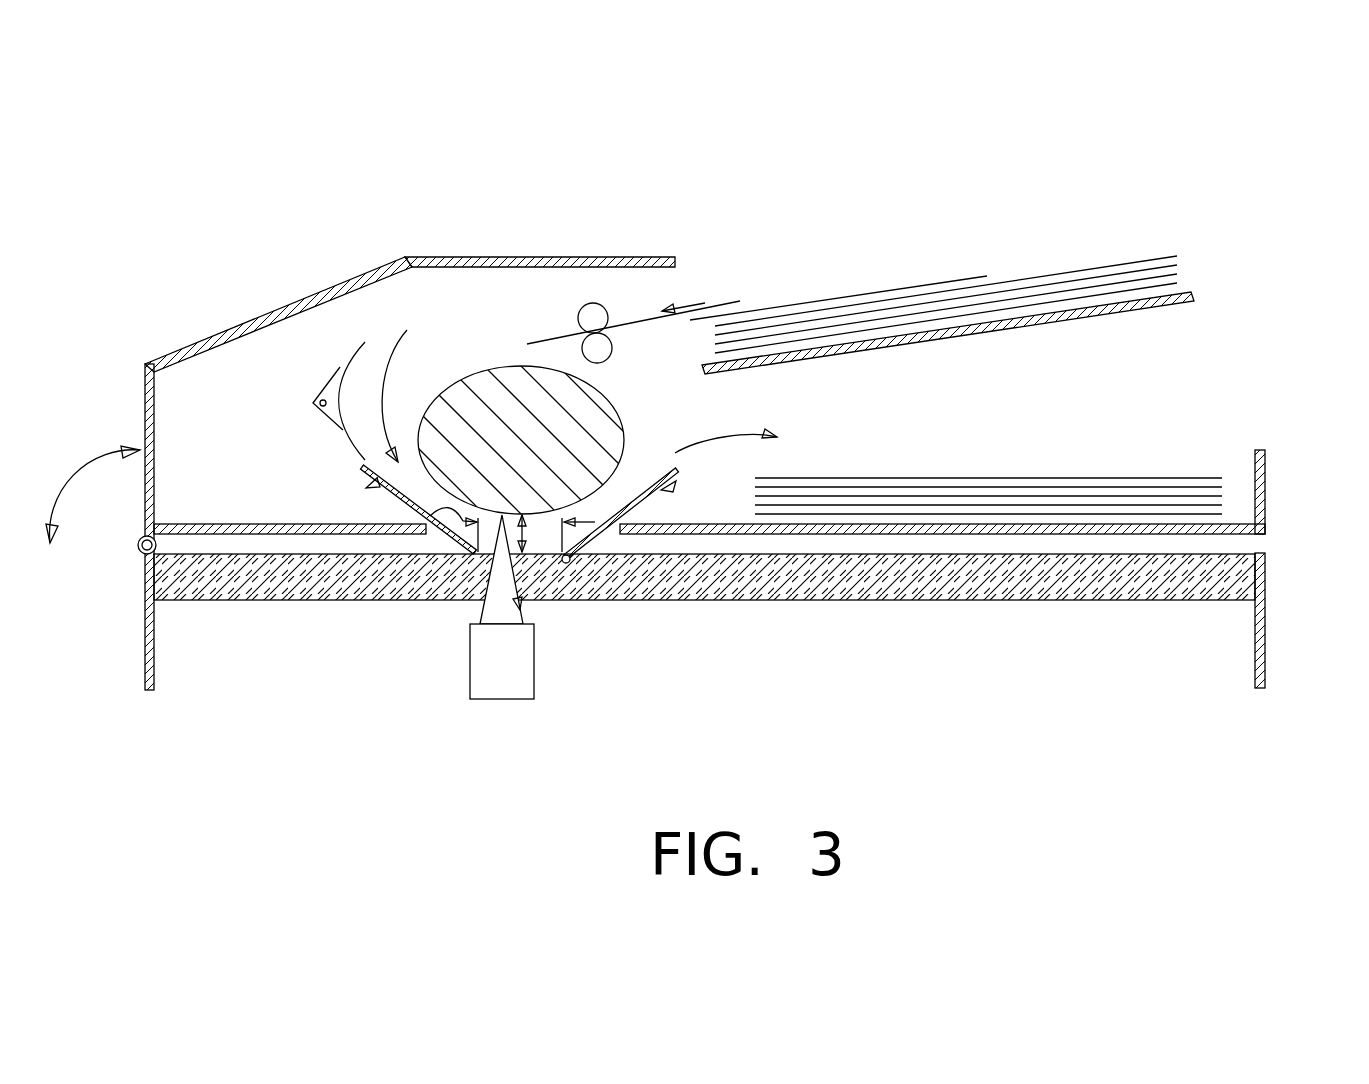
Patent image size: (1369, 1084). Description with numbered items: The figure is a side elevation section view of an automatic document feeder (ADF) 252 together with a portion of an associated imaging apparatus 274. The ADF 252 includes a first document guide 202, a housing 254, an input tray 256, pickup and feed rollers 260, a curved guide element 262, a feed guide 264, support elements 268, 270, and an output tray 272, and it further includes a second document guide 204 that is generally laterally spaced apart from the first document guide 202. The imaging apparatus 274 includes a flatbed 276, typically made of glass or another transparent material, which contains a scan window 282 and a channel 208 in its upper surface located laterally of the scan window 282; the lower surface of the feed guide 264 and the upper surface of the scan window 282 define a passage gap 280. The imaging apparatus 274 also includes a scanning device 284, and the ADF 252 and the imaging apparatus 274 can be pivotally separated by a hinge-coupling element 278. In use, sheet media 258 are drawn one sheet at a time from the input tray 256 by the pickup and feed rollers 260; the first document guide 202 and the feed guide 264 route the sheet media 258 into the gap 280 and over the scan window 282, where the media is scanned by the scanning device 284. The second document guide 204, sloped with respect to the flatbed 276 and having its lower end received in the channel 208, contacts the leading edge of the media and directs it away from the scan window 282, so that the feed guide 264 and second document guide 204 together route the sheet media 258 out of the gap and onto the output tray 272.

The first document guide 202 is at (362, 467).
The second document guide 204 is at (656, 483).
The channel 208 is at (569, 562).
The automatic document feeder 252 is at (1172, 414).
The housing 254 is at (633, 258).
The input tray 256 is at (1197, 297).
The sheet media 258 is at (898, 288).
The pickup and feed rollers 260 is at (606, 322).
The curved guide element 262 is at (326, 393).
The feed guide 264 is at (490, 378).
The support element 268 is at (364, 485).
The support element 270 is at (678, 480).
The output tray 272 is at (1267, 474).
The imaging apparatus 274 is at (1240, 707).
The flatbed 276 is at (315, 593).
The hinge-coupling element 278 is at (137, 545).
The passage gap 280 is at (525, 543).
The scan window 282 is at (417, 512).
The scanning device 284 is at (470, 668).